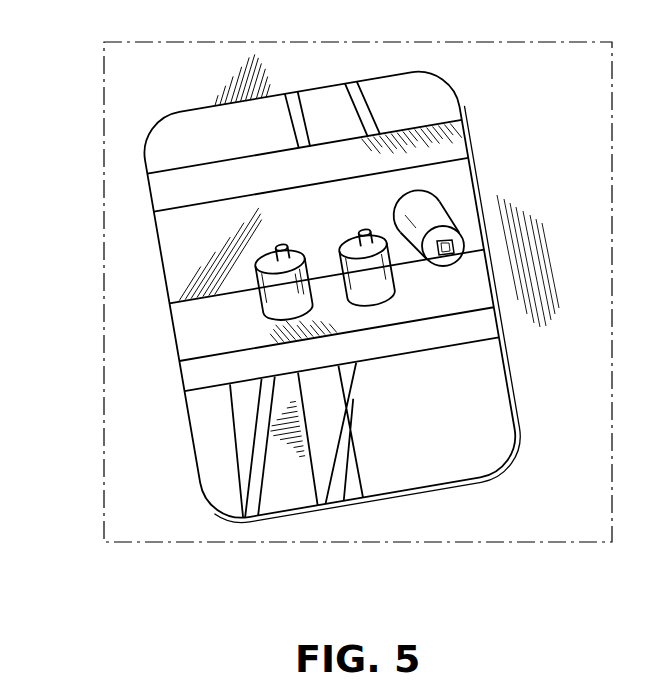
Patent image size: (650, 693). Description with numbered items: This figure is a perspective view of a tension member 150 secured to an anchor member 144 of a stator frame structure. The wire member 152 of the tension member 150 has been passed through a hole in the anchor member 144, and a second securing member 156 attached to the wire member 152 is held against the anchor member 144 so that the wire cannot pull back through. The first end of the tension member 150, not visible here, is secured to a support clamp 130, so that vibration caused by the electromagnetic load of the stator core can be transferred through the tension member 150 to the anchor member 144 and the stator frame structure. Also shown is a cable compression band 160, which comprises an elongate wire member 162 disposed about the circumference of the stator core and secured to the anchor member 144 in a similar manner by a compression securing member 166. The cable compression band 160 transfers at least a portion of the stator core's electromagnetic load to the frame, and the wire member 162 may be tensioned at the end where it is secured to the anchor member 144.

The support clamp 130 is at (320, 437).
The anchor member 144 is at (300, 187).
The tension member 150 is at (253, 448).
The wire member 152 is at (267, 446).
The second securing member 156 is at (278, 288).
The cable compression band 160 is at (462, 182).
The elongate wire member 162 is at (332, 114).
The compression securing member 166 is at (433, 217).